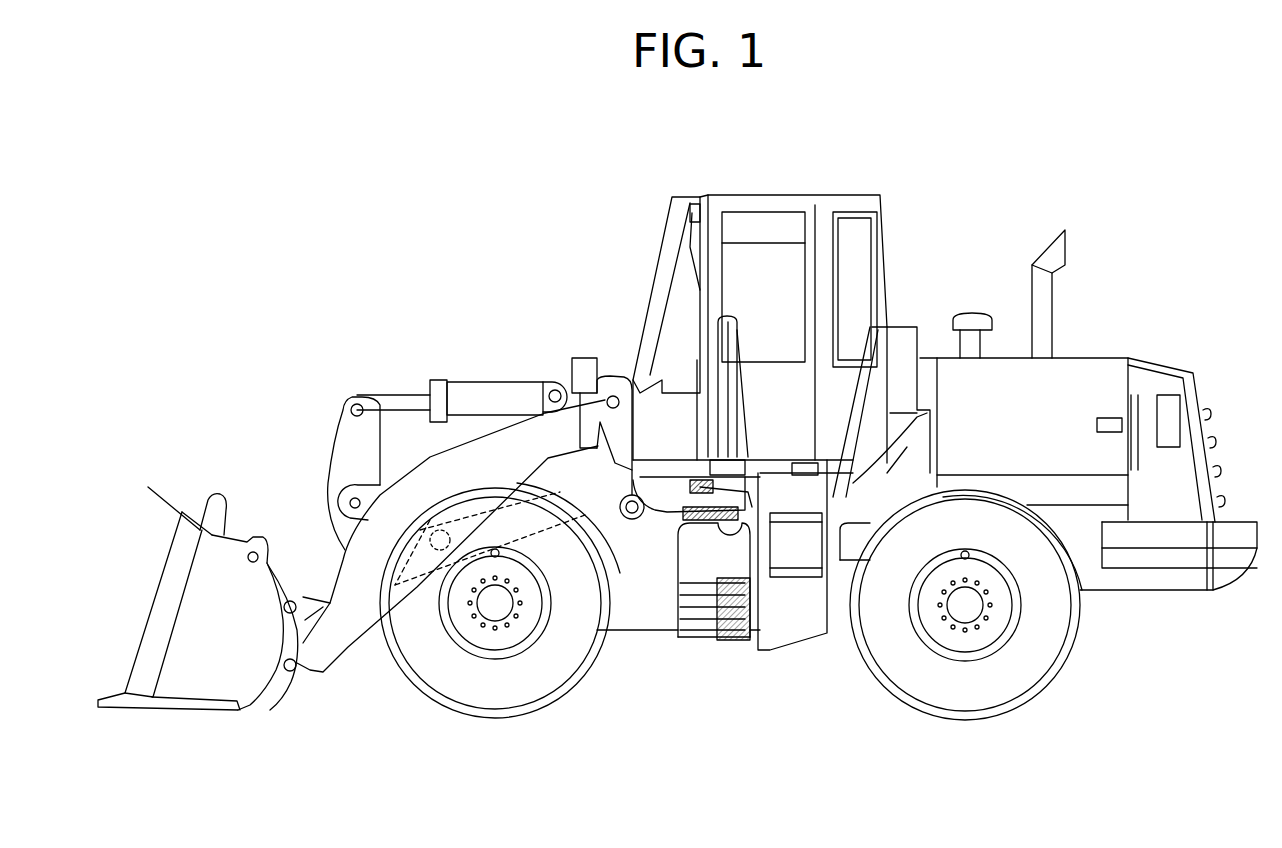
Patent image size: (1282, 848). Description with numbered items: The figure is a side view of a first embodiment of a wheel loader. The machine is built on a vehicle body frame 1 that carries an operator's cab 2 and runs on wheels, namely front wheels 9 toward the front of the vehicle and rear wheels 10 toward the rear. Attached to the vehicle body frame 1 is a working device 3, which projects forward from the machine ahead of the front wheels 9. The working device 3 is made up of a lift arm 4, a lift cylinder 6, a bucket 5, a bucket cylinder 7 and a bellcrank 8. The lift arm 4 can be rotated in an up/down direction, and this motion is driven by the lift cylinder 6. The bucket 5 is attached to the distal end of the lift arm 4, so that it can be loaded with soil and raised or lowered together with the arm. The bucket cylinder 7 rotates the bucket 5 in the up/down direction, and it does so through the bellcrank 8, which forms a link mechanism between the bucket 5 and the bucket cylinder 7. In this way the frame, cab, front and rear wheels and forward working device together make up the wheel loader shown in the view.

The vehicle body frame 1 is at (772, 613).
The operator's cab 2 is at (680, 205).
The working device 3 is at (370, 374).
The lift arm 4 is at (337, 645).
The bucket 5 is at (203, 702).
The lift cylinder 6 is at (540, 560).
The bucket cylinder 7 is at (487, 380).
The bellcrank 8 is at (340, 452).
The front wheels 9 is at (523, 718).
The rear wheels 10 is at (1005, 712).